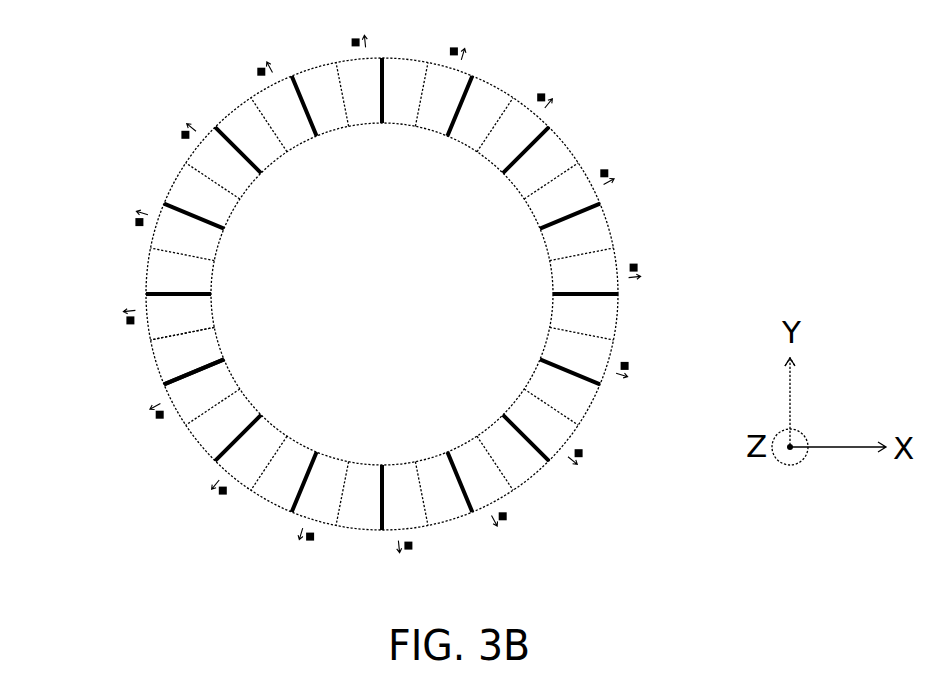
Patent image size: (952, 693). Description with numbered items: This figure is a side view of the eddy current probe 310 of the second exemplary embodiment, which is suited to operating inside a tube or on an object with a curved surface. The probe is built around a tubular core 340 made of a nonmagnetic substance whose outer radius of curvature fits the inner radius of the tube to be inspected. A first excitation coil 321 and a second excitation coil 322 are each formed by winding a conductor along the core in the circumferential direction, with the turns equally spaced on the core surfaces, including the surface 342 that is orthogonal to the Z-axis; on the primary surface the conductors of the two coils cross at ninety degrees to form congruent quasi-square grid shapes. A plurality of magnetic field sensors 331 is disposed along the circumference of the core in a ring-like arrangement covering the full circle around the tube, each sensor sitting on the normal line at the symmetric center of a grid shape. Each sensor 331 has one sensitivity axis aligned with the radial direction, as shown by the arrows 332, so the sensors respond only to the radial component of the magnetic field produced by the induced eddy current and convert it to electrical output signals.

The eddy current probe 310 is at (220, 77).
The first excitation coil 321 is at (178, 173).
The second excitation coil 322 is at (157, 288).
The tubular core 340 is at (150, 338).
The surface of the core 342 is at (178, 357).
The magnetic field sensor 331 is at (223, 498).
The arrows 332 is at (214, 484).